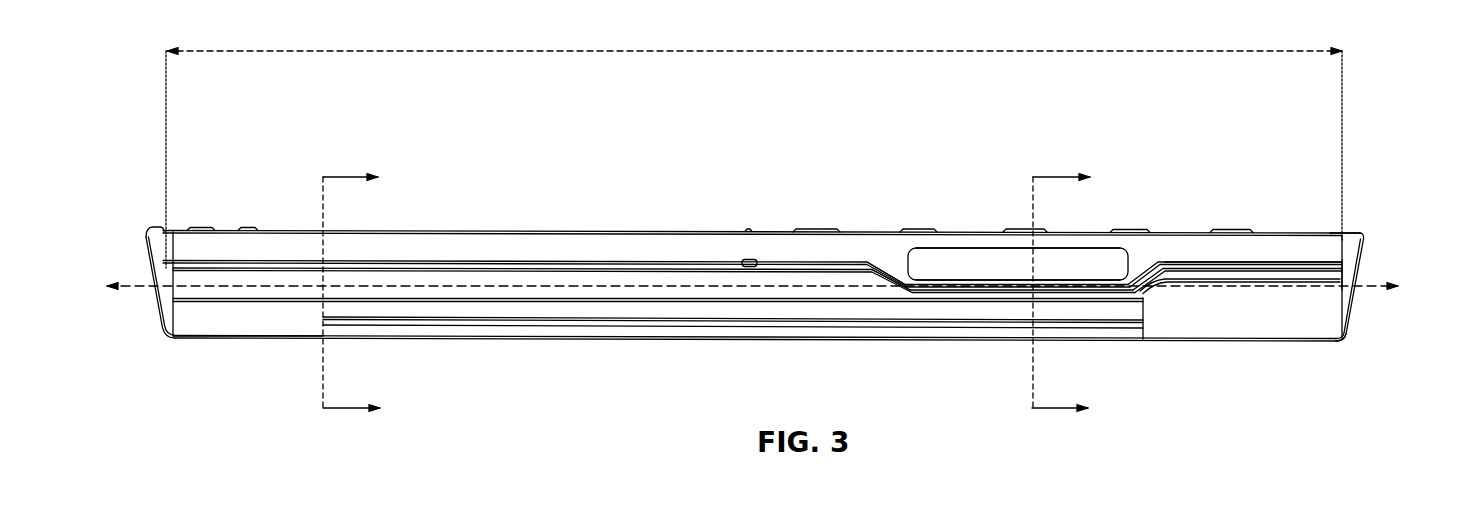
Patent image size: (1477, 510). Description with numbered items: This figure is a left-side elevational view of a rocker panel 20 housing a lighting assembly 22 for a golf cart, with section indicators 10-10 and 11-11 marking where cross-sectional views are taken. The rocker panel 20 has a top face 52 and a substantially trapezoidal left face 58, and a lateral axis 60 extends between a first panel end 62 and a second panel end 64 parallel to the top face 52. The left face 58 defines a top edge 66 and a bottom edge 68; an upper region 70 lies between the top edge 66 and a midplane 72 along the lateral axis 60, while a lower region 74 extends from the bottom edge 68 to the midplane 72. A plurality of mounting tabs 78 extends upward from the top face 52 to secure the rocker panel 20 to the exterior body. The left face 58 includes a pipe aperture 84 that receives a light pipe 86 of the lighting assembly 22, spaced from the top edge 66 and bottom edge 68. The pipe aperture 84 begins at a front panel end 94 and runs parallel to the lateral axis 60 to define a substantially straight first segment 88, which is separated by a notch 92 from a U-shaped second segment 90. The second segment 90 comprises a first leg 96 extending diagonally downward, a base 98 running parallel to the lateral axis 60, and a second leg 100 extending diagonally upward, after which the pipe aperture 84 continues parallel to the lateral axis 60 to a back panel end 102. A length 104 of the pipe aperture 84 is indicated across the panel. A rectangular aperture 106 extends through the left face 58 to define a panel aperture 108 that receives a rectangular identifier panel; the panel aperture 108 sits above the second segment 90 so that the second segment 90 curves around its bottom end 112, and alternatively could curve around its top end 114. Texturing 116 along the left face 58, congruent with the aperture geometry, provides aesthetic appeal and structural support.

The rocker panel 20 is at (233, 320).
The lighting assembly 22 is at (604, 245).
The top face 52 is at (748, 230).
The left face 58 is at (503, 292).
The lateral axis 60 is at (135, 288).
The first panel end 62 is at (146, 250).
The second panel end 64 is at (1367, 244).
The top edge 66 is at (840, 230).
The bottom edge 68 is at (573, 340).
The upper region 70 is at (1381, 270).
The midplane 72 is at (1247, 286).
The lower region 74 is at (1360, 332).
The mounting tabs 78 is at (1227, 231).
The pipe aperture 84 is at (461, 279).
The light pipe 86 is at (350, 263).
The first segment 88 is at (434, 245).
The second segment 90 is at (1271, 247).
The notch 92 is at (747, 291).
The front panel end 94 is at (170, 228).
The first leg 96 is at (896, 295).
The base 98 is at (1043, 309).
The second leg 100 is at (1143, 288).
The back panel end 102 is at (1335, 233).
The length 104 is at (583, 52).
The rectangular aperture 106 is at (992, 292).
The panel aperture 108 is at (1091, 250).
The bottom end 112 is at (1078, 272).
The top end 114 is at (943, 253).
The texturing 116 is at (920, 325).
The section line 10-10 is at (343, 177).
The section line 11-11 is at (1050, 177).